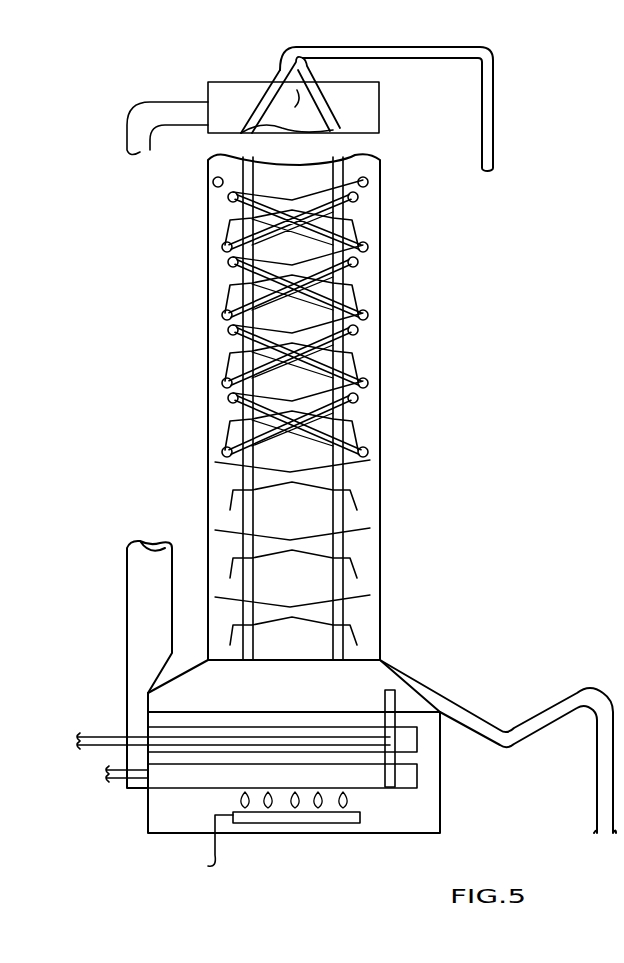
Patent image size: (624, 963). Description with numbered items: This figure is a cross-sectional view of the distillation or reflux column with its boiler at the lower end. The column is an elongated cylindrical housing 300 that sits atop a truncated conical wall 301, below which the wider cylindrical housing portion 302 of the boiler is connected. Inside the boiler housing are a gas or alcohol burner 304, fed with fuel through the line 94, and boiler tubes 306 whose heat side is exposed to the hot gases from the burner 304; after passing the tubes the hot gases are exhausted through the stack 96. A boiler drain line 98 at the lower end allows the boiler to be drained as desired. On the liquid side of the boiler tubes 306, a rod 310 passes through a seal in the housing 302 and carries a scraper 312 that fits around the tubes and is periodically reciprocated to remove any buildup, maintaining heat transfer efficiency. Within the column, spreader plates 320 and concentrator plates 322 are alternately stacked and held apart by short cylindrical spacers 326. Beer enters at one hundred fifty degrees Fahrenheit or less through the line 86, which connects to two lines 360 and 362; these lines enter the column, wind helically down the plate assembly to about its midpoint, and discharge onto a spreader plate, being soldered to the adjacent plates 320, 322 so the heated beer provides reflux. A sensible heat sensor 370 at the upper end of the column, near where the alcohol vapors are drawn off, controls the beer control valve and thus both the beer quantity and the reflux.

The line 86 is at (396, 52).
The line 360 is at (280, 64).
The line 362 is at (308, 70).
The sensible heat sensor 370 is at (257, 118).
The elongated cylindrical housing 300 is at (228, 315).
The short cylindrical spacers 326 is at (222, 248).
The concentrator plates 322 is at (228, 398).
The spreader plates 320 is at (225, 493).
The stack 96 is at (147, 588).
The rod 310 is at (100, 735).
The boiler drain line 98 is at (117, 780).
The scraper 312 is at (390, 690).
The truncated conical wall 301 is at (423, 683).
The boiler tubes 306 is at (407, 727).
The cylindrical housing portion 302 is at (440, 808).
The burner 304 is at (317, 817).
The line 94 is at (213, 858).